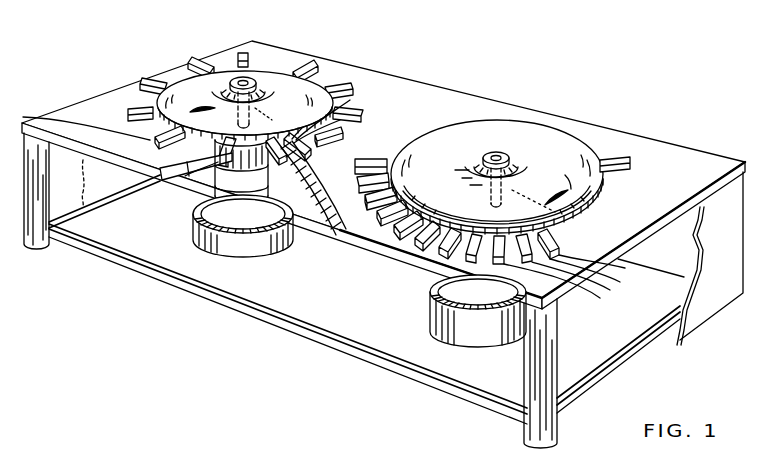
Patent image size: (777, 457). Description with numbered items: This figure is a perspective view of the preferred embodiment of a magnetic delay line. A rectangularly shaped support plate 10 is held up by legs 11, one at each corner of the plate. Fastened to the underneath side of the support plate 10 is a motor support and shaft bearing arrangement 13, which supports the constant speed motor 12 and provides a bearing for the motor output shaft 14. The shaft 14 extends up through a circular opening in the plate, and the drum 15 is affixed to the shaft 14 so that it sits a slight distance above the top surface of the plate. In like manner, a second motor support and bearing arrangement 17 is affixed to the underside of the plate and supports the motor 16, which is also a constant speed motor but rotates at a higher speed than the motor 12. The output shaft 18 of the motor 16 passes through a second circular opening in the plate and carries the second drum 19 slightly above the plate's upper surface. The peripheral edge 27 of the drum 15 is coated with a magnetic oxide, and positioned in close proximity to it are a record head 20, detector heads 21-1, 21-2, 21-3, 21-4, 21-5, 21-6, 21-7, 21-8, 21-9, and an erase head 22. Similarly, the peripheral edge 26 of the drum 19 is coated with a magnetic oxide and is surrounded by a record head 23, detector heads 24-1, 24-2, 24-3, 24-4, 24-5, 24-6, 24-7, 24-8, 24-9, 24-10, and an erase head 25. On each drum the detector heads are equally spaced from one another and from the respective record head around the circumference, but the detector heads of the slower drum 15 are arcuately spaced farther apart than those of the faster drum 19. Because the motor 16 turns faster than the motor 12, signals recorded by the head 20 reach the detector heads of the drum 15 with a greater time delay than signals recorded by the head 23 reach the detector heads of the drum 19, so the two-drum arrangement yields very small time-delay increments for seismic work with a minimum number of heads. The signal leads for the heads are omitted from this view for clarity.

The support plate 10 is at (725, 160).
The legs 11 is at (42, 246).
The constant speed motor 12 is at (226, 254).
The motor support and shaft bearing arrangement 13 is at (228, 204).
The motor output shaft 14 is at (228, 76).
The drum 15 is at (267, 78).
The motor 16 is at (492, 350).
The second motor support and bearing arrangement 17 is at (481, 346).
The output shaft 18 is at (505, 150).
The second drum 19 is at (564, 144).
The record head 20 is at (292, 155).
The detector head 21-1 is at (185, 178).
The detector head 21-2 is at (155, 133).
The detector head 21-3 is at (128, 110).
The detector head 21-4 is at (142, 80).
The detector head 21-5 is at (190, 59).
The detector head 21-6 is at (243, 53).
The detector head 21-7 is at (303, 64).
The detector head 21-8 is at (348, 86).
The detector head 21-9 is at (364, 110).
The erase head 22 is at (344, 131).
The record head 23 is at (582, 262).
The detector head 24-1 is at (555, 258).
The detector head 24-2 is at (527, 262).
The detector head 24-3 is at (498, 265).
The detector head 24-4 is at (471, 264).
The detector head 24-5 is at (432, 230).
The detector head 24-6 is at (412, 242).
The detector head 24-7 is at (395, 228).
The detector head 24-8 is at (382, 212).
The detector head 24-9 is at (373, 194).
The detector head 24-10 is at (370, 176).
The erase head 25 is at (624, 158).
The peripheral edge 26 is at (600, 195).
The peripheral edge 27 is at (352, 136).